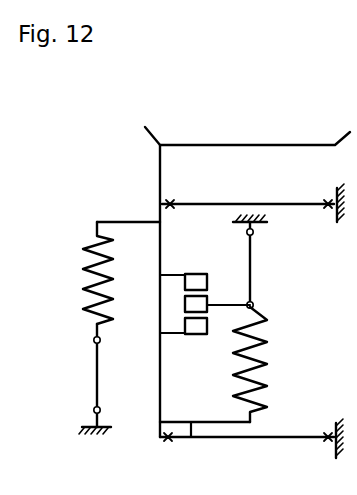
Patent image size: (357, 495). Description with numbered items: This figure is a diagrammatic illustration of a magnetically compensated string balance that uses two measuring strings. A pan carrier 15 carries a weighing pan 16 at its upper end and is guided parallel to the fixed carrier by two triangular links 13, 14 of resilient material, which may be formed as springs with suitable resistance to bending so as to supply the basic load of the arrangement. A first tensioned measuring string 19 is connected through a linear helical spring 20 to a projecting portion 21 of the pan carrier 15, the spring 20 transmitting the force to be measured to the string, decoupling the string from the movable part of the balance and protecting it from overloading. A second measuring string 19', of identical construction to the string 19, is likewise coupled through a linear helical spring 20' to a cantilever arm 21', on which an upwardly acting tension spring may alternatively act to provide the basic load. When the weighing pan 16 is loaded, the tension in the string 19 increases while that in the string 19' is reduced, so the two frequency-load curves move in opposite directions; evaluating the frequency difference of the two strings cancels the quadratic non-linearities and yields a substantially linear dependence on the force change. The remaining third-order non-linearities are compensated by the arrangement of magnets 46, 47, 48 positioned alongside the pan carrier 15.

The triangular link 13 is at (245, 204).
The triangular link 14 is at (243, 437).
The pan carrier 15 is at (160, 372).
The weighing pan 16 is at (245, 145).
The measuring string 19 is at (260, 261).
The measuring string 19' is at (74, 379).
The linear helical spring 20 is at (269, 364).
The linear helical spring 20' is at (75, 273).
The projecting portion 21 is at (205, 448).
The cantilever arm 21' is at (128, 203).
The magnet 46 is at (196, 274).
The magnet 47 is at (185, 305).
The magnet 48 is at (196, 334).